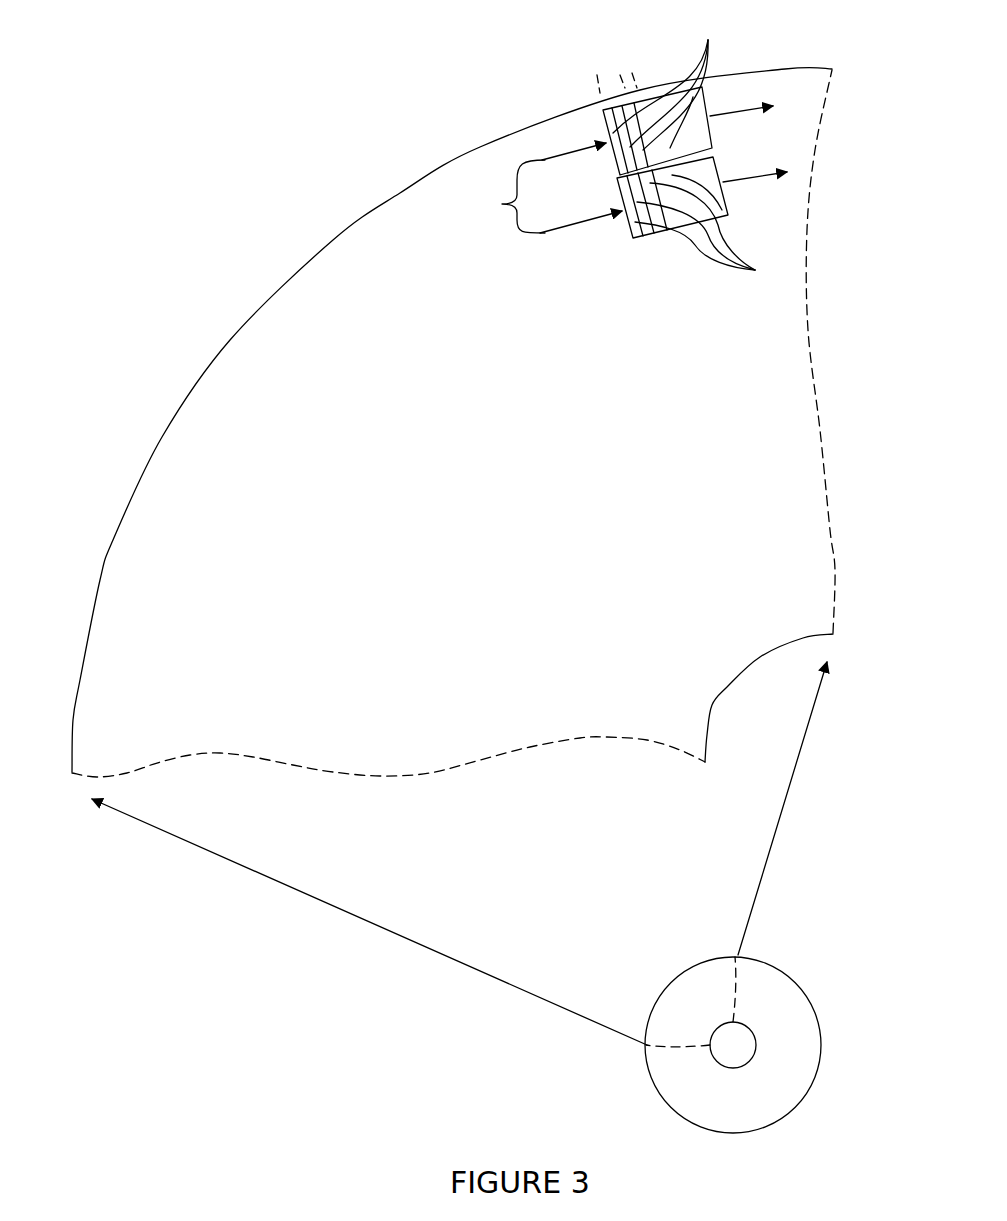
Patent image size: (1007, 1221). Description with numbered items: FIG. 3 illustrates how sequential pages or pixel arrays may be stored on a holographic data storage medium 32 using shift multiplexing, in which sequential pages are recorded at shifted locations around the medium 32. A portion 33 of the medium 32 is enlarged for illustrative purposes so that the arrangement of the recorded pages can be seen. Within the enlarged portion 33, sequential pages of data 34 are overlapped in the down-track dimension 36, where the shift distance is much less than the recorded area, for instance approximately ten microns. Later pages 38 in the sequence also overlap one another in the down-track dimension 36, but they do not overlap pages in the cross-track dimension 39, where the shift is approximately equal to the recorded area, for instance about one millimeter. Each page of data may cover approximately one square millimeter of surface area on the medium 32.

The medium 32 is at (675, 1096).
The portion of medium 33 is at (340, 290).
The sequential pages of data 34 is at (693, 83).
The down-track dimension 36 is at (598, 97).
The later pages 38 is at (711, 232).
The cross-track dimension 39 is at (545, 188).